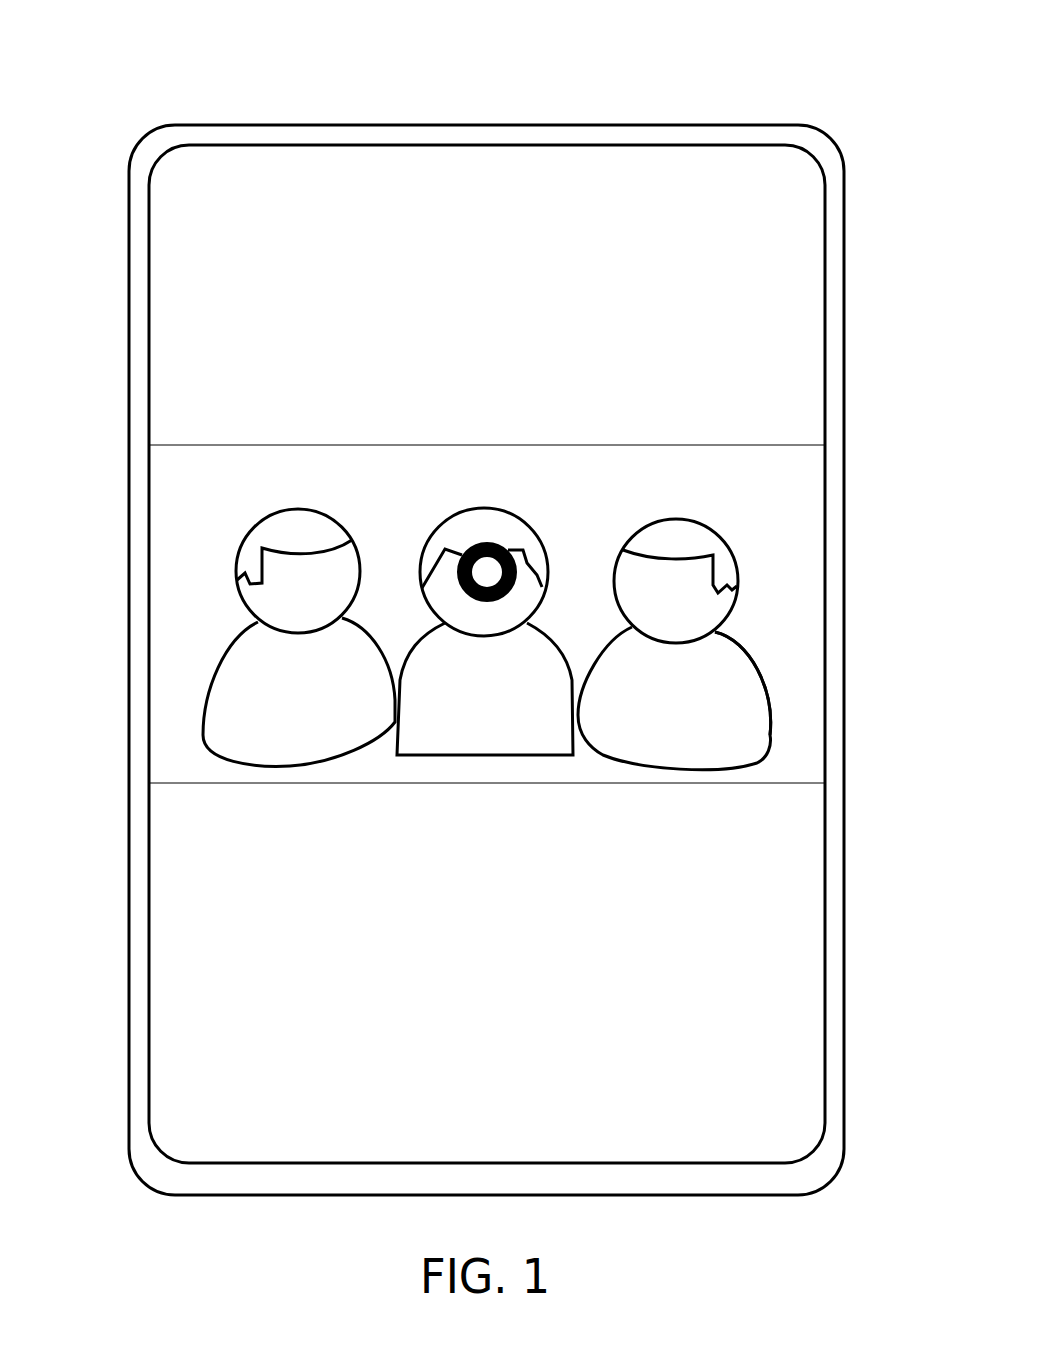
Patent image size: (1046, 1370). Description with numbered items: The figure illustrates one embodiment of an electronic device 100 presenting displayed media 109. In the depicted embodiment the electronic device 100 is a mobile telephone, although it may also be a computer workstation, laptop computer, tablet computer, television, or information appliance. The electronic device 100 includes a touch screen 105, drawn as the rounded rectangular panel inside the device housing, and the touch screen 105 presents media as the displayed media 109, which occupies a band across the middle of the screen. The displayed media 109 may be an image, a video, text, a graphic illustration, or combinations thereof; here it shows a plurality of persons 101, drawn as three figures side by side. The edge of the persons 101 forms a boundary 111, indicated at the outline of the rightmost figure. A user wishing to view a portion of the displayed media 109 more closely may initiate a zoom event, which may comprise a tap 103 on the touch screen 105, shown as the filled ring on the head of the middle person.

The electronic device 100 is at (150, 130).
The touch screen 105 is at (223, 183).
The displayed media 109 is at (787, 482).
The persons 101 is at (294, 702).
The tap 103 is at (525, 552).
The boundary 111 is at (773, 733).